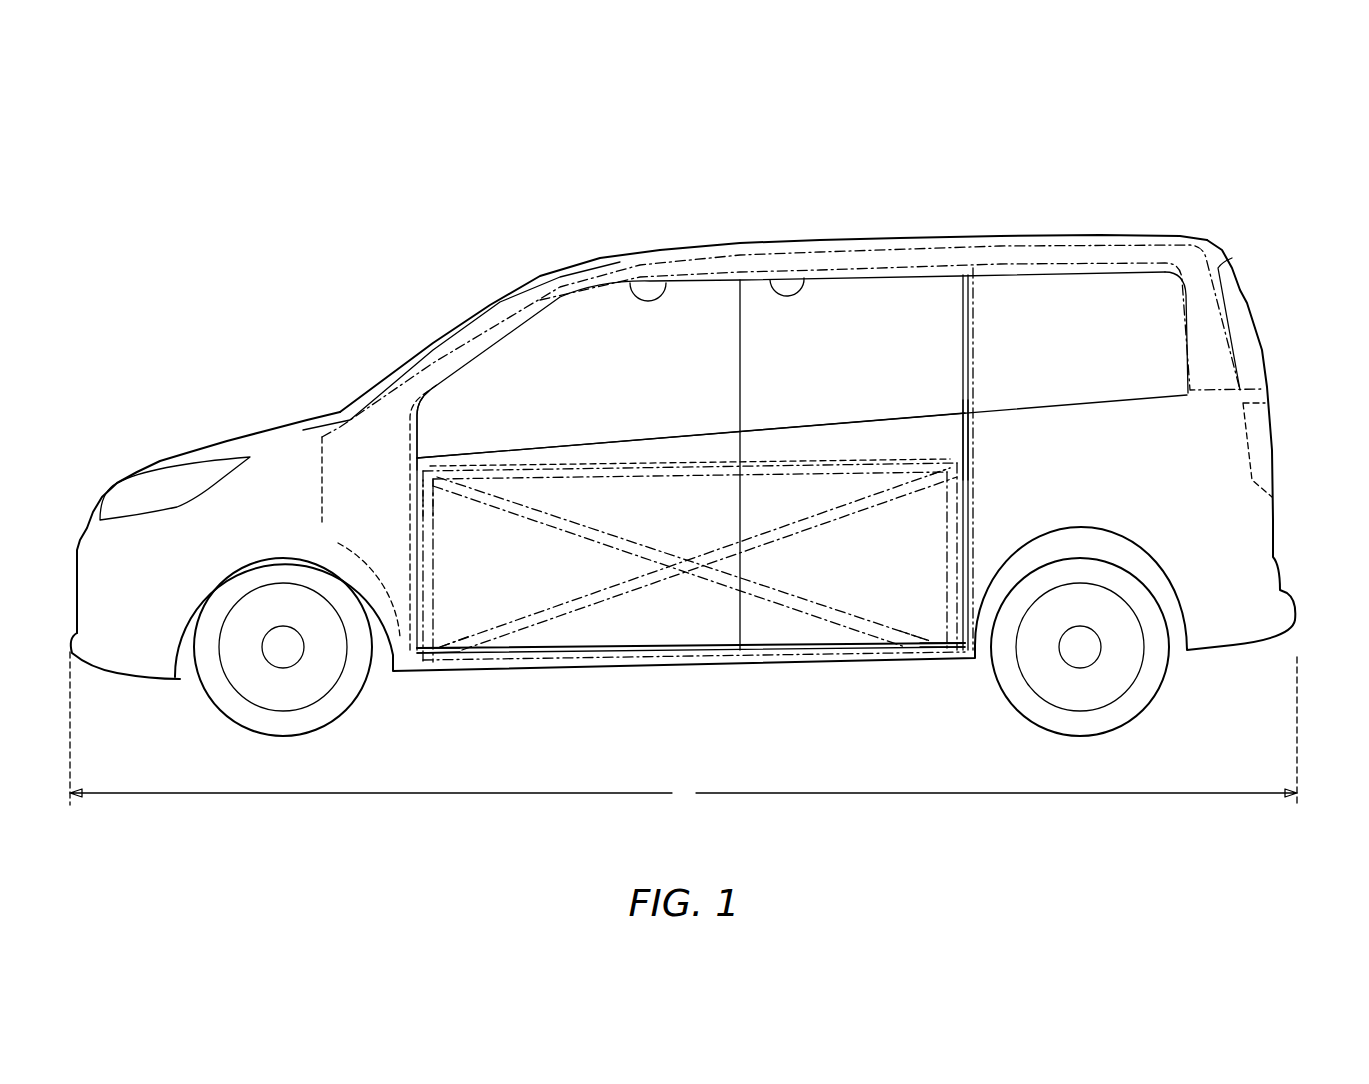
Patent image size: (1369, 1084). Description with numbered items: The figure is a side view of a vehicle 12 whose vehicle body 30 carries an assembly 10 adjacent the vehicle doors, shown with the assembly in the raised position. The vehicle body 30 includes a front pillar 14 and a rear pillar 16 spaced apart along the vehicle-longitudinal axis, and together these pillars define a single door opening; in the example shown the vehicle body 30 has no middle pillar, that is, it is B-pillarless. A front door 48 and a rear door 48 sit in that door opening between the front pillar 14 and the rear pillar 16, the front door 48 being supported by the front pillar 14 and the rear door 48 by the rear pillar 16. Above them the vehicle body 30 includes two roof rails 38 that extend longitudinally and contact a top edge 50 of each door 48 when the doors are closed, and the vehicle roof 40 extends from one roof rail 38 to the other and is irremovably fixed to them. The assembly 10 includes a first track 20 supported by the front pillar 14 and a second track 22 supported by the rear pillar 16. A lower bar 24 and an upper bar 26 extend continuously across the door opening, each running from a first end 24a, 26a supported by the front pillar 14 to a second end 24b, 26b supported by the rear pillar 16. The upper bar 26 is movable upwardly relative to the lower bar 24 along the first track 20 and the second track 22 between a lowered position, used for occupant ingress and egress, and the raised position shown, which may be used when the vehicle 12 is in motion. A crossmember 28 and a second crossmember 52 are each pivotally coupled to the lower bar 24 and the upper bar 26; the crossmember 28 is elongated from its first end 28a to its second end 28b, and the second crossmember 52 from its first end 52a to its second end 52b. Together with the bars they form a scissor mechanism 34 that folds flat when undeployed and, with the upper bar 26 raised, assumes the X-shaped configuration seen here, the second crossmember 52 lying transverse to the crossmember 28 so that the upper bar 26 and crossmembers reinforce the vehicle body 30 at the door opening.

The assembly 10 is at (887, 368).
The vehicle 12 is at (1076, 133).
The front pillar 14 is at (437, 347).
The rear pillar 16 is at (976, 325).
The first track 20 is at (434, 565).
The second track 22 is at (946, 562).
The lower bar 24 is at (680, 672).
The first end of the lower bar 24a is at (447, 672).
The second end of the lower bar 24b is at (932, 665).
The upper bar 26 is at (668, 462).
The first end of the upper bar 26a is at (437, 460).
The second end of the upper bar 26b is at (946, 470).
The crossmember 28 is at (588, 520).
The first end of the crossmember 28a is at (446, 650).
The second end of the crossmember 28b is at (430, 495).
The vehicle body 30 is at (1186, 457).
The scissor mechanism 34 is at (838, 456).
The roof rails 38 is at (822, 254).
The vehicle roof 40 is at (697, 244).
The door 48 is at (589, 328).
The top edge of the doors 50 is at (640, 283).
The second crossmember 52 is at (760, 528).
The first end of the second crossmember 52a is at (918, 642).
The second end of the second crossmember 52b is at (968, 485).